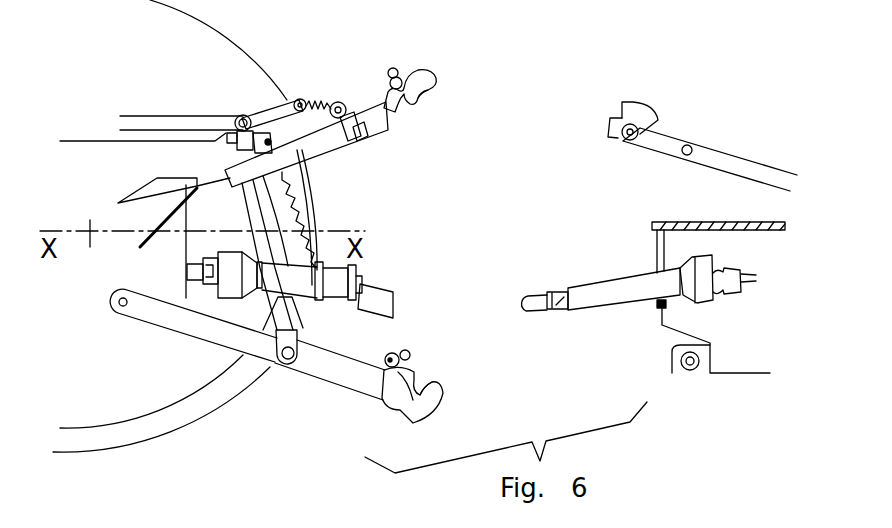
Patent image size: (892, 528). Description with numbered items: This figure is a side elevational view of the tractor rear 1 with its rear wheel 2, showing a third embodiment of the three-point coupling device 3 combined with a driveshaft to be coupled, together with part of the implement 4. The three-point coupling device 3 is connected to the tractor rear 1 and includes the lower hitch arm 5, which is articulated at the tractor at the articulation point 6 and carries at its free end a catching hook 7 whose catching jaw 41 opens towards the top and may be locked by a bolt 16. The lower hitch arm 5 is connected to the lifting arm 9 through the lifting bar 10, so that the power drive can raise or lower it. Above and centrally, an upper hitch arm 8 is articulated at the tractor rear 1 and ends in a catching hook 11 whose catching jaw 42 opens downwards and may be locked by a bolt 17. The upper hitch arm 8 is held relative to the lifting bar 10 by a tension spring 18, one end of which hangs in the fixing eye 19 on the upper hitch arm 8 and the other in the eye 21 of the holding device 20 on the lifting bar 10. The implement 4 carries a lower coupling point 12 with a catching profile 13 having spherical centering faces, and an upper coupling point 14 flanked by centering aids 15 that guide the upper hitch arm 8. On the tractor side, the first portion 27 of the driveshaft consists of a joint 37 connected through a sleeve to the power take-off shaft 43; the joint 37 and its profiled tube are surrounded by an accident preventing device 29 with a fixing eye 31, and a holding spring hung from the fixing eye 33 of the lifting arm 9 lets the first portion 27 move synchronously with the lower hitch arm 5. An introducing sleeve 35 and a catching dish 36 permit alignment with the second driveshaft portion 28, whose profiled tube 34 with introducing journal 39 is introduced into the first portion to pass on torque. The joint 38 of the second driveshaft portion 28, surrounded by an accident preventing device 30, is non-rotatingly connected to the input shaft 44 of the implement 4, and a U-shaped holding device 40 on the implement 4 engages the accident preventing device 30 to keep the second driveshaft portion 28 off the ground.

The tractor rear 1 is at (143, 207).
The rear wheel 2 is at (183, 418).
The three-point coupling device 3 is at (320, 384).
The implement 4 is at (752, 247).
The lower hitch arm 5 is at (354, 374).
The articulation point 6 is at (124, 306).
The catching hook 7 is at (413, 405).
The upper hitch arm 8 is at (364, 130).
The lifting arm 9 is at (150, 122).
The lifting bar 10 is at (262, 200).
The catching hook 11 is at (403, 95).
The lower coupling point 12 is at (690, 370).
The catching profile 13 is at (676, 360).
The upper coupling point 14 is at (626, 137).
The centering aid 15 is at (645, 108).
The bolt 16 is at (420, 384).
The bolt 17 is at (389, 68).
The tension spring 18 is at (315, 102).
The fixing eye 19 is at (340, 102).
The holding device 20 is at (288, 130).
The eye 21 is at (300, 99).
The first portion of the driveshaft 27 is at (300, 290).
The second driveshaft portion 28 is at (626, 288).
The accident preventing device 29 is at (226, 292).
The accident preventing device 30 is at (700, 258).
The fixing eye 31 is at (330, 290).
The fixing eye 33 is at (252, 118).
The profiled tube 34 is at (563, 308).
The introducing sleeve 35 is at (366, 285).
The catching dish 36 is at (395, 299).
The joint 37 is at (200, 262).
The joint 38 is at (730, 294).
The introducing journal 39 is at (531, 302).
The holding device 40 is at (660, 255).
The catching jaw 41 is at (440, 384).
The catching jaw 42 is at (437, 89).
The power take-off shaft 43 is at (190, 272).
The input shaft 44 is at (751, 280).